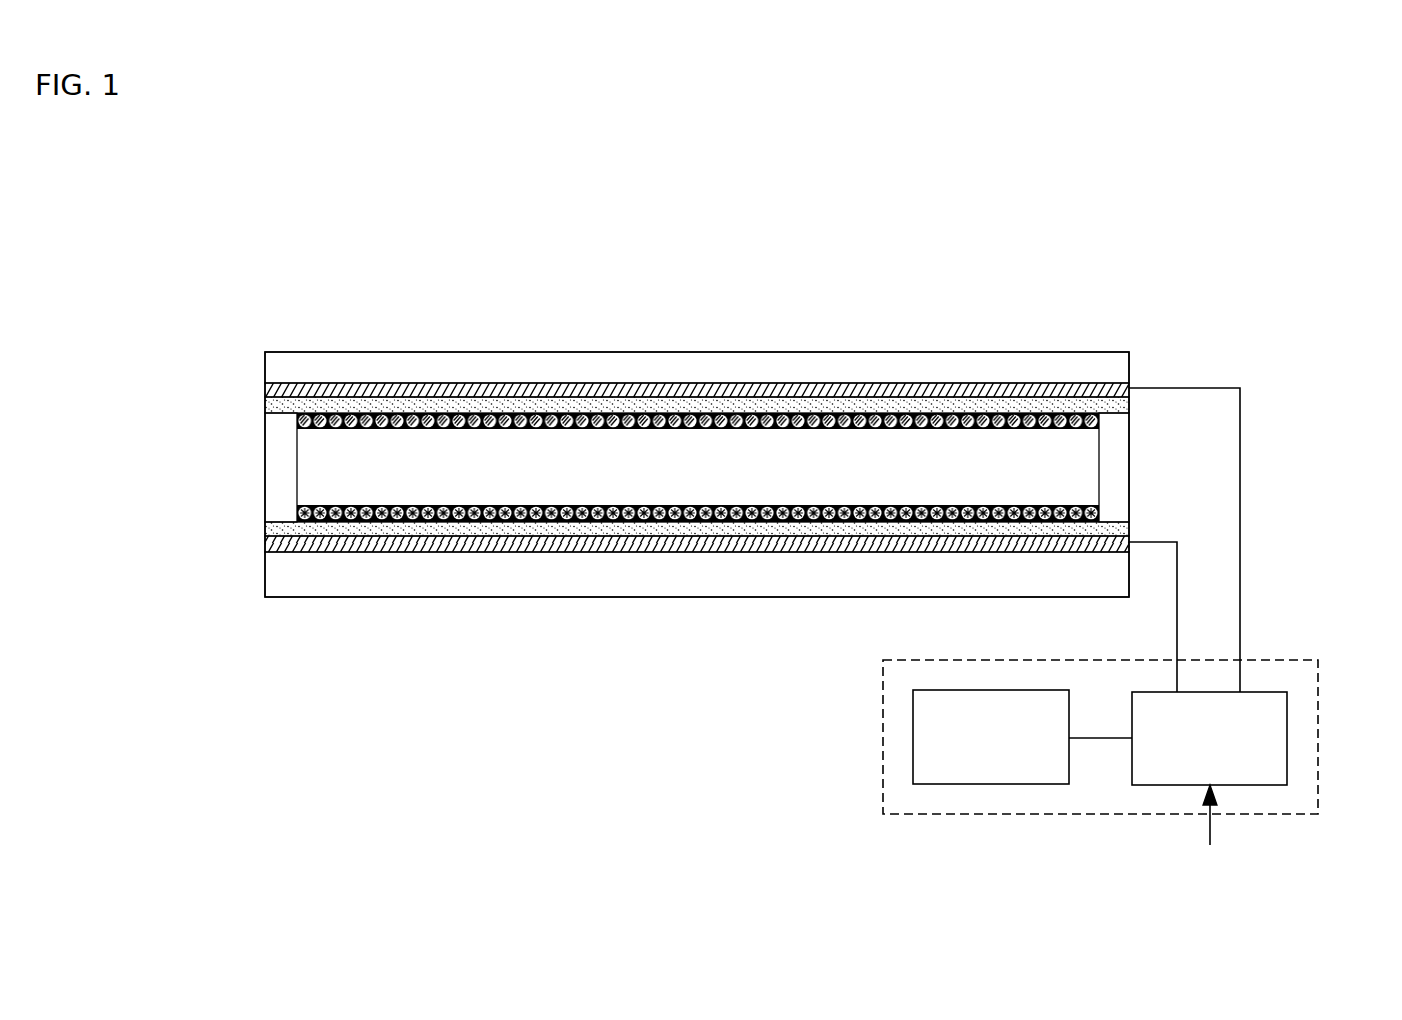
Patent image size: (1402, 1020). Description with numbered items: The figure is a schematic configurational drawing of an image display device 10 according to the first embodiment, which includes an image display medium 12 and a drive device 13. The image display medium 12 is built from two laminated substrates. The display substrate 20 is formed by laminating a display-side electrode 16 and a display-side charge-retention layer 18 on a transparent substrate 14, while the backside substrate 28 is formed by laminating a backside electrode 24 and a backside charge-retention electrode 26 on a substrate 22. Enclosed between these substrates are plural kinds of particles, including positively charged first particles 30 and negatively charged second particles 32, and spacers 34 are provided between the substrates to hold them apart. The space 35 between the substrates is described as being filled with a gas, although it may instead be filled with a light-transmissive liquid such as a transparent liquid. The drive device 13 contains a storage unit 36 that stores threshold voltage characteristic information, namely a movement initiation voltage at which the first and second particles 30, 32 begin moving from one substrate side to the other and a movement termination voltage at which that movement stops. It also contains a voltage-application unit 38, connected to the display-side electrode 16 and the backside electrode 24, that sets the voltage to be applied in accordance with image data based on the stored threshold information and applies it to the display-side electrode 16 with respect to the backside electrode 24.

The image display device 10 is at (712, 218).
The image display medium 12 is at (750, 322).
The drive device 13 is at (958, 815).
The transparent substrate 14 is at (350, 365).
The display-side electrode 16 is at (400, 390).
The display-side charge-retention layer 18 is at (455, 402).
The display substrate 20 is at (325, 298).
The substrate 22 is at (365, 590).
The backside electrode 24 is at (403, 545).
The backside charge-retention electrode 26 is at (465, 535).
The backside substrate 28 is at (481, 672).
The first particles 30 is at (715, 430).
The second particles 32 is at (797, 505).
The spacers 34 is at (1118, 458).
The space 35 is at (937, 457).
The storage unit 36 is at (913, 738).
The voltage-application unit 38 is at (1290, 738).